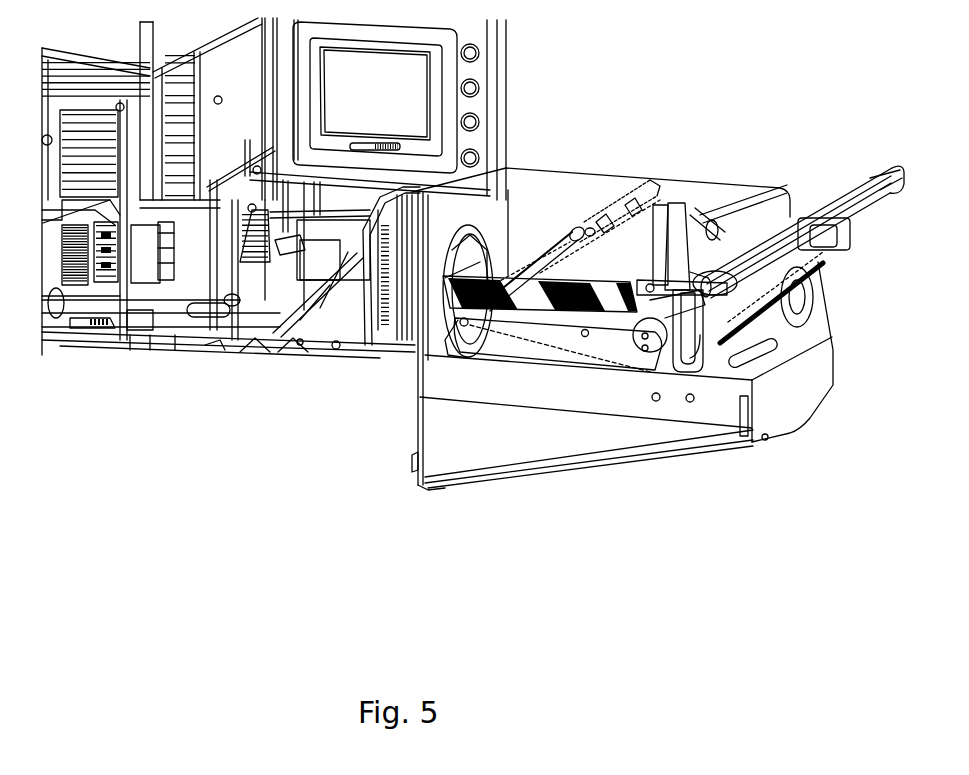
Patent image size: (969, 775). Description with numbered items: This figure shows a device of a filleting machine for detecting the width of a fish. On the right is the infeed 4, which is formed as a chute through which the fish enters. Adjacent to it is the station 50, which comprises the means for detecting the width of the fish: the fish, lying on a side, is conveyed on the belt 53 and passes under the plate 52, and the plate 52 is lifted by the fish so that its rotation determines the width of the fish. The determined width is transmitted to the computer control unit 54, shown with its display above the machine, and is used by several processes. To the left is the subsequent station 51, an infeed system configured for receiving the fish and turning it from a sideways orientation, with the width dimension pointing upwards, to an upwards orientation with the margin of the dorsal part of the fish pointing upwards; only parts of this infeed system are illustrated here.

The infeed 4 is at (815, 203).
The station 50 is at (810, 420).
The station 51 is at (72, 352).
The plate 52 is at (562, 250).
The belt 53 is at (600, 283).
The computer control unit 54 is at (473, 73).